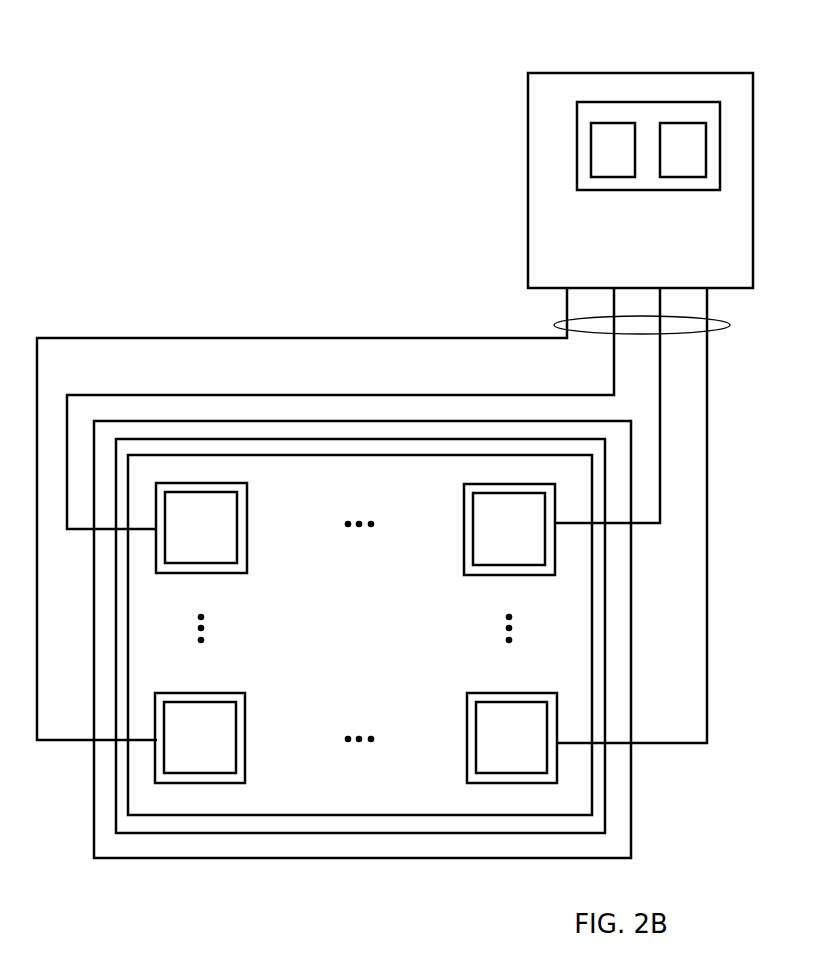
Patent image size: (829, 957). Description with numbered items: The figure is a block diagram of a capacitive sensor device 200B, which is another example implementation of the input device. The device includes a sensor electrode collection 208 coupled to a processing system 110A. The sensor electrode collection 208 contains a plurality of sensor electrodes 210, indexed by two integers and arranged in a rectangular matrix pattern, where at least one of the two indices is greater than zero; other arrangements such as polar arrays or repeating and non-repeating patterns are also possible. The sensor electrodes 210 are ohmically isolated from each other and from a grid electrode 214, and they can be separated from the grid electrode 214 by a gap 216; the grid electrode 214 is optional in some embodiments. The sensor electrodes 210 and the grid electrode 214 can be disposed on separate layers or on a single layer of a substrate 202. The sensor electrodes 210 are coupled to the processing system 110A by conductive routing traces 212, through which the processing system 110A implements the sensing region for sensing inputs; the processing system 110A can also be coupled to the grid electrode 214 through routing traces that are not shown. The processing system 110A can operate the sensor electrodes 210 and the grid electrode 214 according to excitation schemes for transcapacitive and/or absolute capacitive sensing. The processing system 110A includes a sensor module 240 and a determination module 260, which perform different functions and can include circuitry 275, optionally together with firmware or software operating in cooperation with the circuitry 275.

The capacitive sensor device 200B is at (289, 243).
The processing system 110A is at (640, 180).
The circuitry 275 is at (593, 101).
The sensor module 240 is at (613, 150).
The determination module 260 is at (683, 150).
The conductive routing traces 212 is at (730, 325).
The substrate 202 is at (128, 860).
The sensor electrode collection 208 is at (176, 835).
The grid electrode 214 is at (313, 800).
The sensor electrodes 210 is at (170, 538).
The gap 216 is at (170, 748).